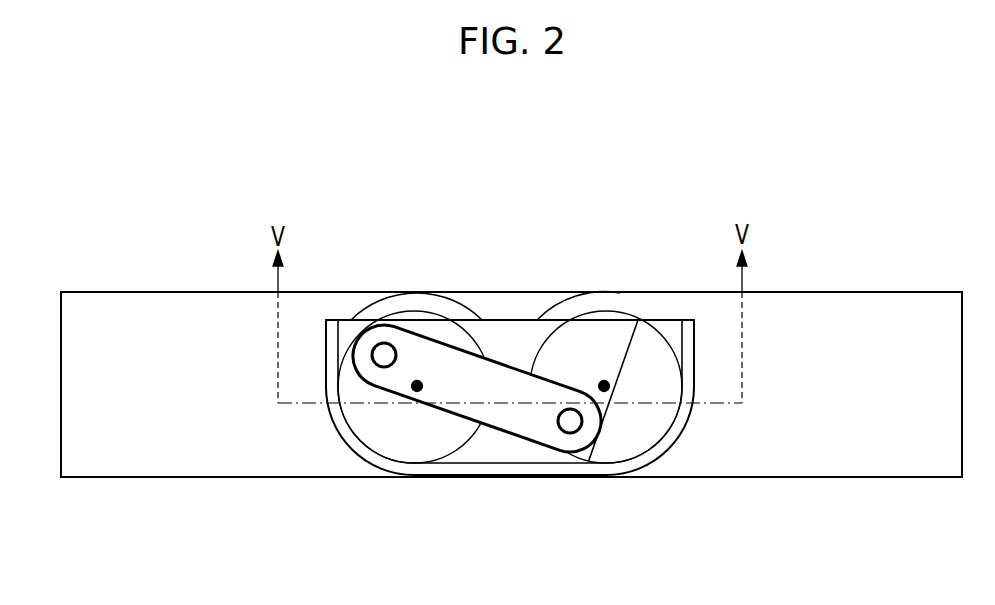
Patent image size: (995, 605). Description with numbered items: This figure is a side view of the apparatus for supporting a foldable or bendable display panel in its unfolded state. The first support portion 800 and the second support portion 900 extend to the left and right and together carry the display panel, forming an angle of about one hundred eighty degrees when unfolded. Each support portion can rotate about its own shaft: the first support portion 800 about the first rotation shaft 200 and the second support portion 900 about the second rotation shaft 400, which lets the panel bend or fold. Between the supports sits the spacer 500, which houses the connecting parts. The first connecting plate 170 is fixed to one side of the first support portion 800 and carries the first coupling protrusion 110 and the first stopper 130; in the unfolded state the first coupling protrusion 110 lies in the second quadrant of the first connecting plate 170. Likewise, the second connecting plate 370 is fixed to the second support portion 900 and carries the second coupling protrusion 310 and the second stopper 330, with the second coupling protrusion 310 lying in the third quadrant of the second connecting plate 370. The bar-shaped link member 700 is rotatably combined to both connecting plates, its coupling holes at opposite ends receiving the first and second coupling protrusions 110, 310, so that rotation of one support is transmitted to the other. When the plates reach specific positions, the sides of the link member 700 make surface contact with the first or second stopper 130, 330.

The first coupling protrusion 110 is at (378, 343).
The first stopper 130 is at (417, 445).
The first connecting plate 170 is at (417, 320).
The first rotation shaft 200 is at (419, 380).
The second coupling protrusion 310 is at (576, 432).
The second stopper 330 is at (637, 430).
The second connecting plate 370 is at (587, 325).
The second rotation shaft 400 is at (604, 379).
The spacer 500 is at (450, 470).
The link member 700 is at (513, 422).
The first support portion 800 is at (137, 450).
The second support portion 900 is at (878, 450).